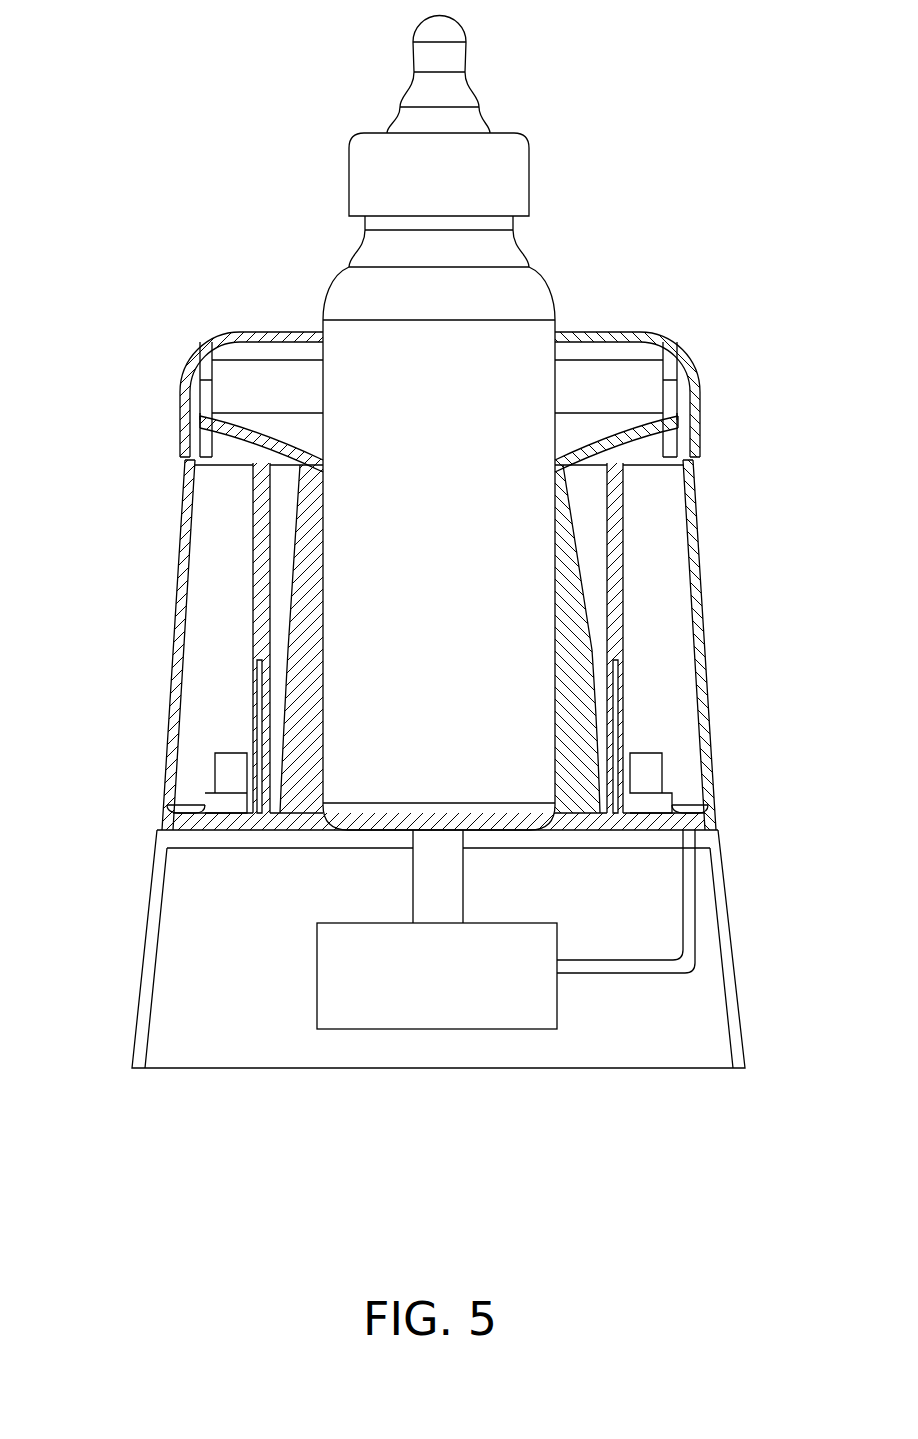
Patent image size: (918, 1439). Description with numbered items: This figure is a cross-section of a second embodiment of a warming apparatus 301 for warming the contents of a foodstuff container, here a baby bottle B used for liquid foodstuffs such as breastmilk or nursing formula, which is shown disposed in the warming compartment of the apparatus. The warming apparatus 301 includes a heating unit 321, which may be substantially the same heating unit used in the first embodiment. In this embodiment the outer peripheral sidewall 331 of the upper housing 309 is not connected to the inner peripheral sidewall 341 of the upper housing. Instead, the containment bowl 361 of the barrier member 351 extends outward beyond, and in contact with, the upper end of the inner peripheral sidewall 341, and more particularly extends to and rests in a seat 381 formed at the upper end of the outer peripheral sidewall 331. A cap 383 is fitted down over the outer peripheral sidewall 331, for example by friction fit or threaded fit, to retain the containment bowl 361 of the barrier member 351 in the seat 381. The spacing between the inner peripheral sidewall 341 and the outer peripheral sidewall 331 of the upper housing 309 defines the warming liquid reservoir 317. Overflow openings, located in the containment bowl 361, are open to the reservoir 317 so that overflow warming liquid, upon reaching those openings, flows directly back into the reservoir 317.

The warming apparatus 301 is at (273, 224).
The baby bottle B is at (529, 183).
The cap 383 is at (200, 360).
The seat 381 is at (690, 440).
The containment bowl 361 is at (627, 445).
The upper housing 309 is at (705, 597).
The outer peripheral sidewall 331 is at (185, 600).
The inner peripheral sidewall 341 is at (625, 555).
The barrier member 351 is at (300, 568).
The warming liquid reservoir 317 is at (680, 639).
The heating unit 321 is at (382, 1043).